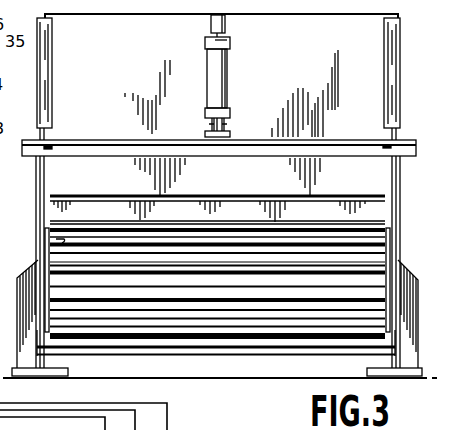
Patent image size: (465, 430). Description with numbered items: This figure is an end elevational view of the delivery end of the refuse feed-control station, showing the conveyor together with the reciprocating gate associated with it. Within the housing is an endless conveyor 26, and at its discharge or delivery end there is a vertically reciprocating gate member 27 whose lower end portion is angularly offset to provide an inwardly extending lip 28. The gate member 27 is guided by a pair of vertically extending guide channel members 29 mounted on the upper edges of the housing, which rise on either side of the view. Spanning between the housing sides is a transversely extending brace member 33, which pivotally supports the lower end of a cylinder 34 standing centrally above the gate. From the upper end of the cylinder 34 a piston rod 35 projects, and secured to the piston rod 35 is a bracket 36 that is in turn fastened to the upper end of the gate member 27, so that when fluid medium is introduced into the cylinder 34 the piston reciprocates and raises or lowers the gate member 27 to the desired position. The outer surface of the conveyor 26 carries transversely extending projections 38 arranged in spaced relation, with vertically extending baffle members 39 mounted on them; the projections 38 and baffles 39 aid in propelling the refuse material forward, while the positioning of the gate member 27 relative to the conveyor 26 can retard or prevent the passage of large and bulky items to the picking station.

The endless conveyor 26 is at (390, 254).
The gate member 27 is at (312, 74).
The inwardly extending lip 28 is at (113, 219).
The guide channel members 29 is at (43, 80).
The brace member 33 is at (118, 140).
The cylinder 34 is at (210, 84).
The piston rod 35 is at (229, 42).
The bracket 36 is at (208, 18).
The transversely extending projections 38 is at (50, 250).
The baffle members 39 is at (56, 241).